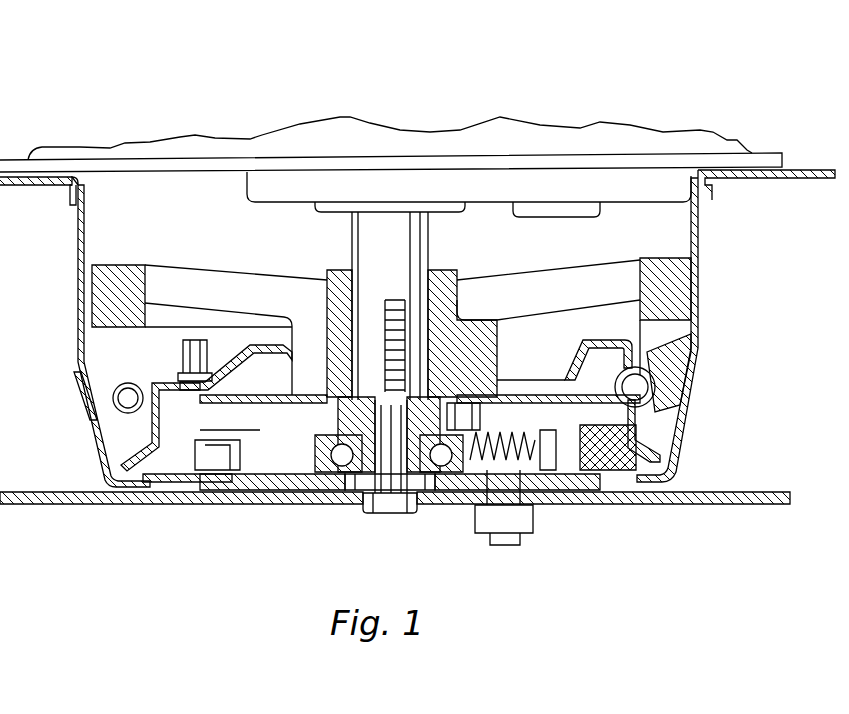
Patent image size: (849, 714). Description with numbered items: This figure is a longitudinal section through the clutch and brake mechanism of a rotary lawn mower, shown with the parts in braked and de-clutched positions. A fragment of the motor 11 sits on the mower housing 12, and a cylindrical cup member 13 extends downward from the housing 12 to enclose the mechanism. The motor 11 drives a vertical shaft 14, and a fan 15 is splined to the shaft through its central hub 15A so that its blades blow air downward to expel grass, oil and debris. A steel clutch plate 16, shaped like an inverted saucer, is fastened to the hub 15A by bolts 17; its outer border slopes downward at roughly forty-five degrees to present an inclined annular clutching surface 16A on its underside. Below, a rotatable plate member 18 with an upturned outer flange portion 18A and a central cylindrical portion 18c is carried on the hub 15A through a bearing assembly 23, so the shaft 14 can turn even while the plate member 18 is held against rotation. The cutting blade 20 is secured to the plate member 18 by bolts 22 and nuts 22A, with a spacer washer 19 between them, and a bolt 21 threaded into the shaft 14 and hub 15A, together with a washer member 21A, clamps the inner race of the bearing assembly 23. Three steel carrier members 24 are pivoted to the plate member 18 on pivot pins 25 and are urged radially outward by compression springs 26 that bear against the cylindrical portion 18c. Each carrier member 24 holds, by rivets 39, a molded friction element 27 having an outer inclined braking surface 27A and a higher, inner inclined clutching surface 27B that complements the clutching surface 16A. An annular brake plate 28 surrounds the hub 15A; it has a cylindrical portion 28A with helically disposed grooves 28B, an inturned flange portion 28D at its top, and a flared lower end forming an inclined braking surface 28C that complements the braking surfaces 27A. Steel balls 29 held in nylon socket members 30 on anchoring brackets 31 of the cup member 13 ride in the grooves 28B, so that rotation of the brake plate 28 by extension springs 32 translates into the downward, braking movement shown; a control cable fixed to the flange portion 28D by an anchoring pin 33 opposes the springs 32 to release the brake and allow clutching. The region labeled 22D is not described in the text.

The motor 11 is at (606, 133).
The mower housing 12 is at (795, 181).
The cup member 13 is at (760, 165).
The shaft 14 is at (412, 222).
The fan 15 is at (530, 285).
The hub 15A is at (488, 340).
The clutch plate 16 is at (302, 393).
The inclined annular clutching surface 16A is at (198, 416).
The bolts 17 is at (483, 411).
The rotatable plate member 18 is at (185, 490).
The outer flange portion 18A is at (700, 462).
The central cylindrical portion 18c is at (316, 448).
The spacer washer 19 is at (262, 492).
The cutting blade 20 is at (56, 506).
The bolt 21 is at (390, 515).
The washer member 21A is at (366, 498).
The bolts 22 is at (506, 546).
The nuts 22A is at (650, 338).
The plate recess 22D is at (598, 338).
The bearing assembly 23 is at (320, 492).
The carrier members 24 is at (210, 490).
The pivot pins 25 is at (232, 492).
The compression springs 26 is at (546, 470).
The friction elements 27 is at (625, 466).
The inclined braking surface 27A is at (640, 472).
The inclined clutching surface 27B is at (605, 470).
The brake plate 28 is at (640, 432).
The cylindrical portion 28A is at (150, 425).
The helically disposed grooves 28B is at (652, 411).
The inclined braking surface 28C is at (652, 437).
The inturned flange portion 28D is at (165, 383).
The steel balls 29 is at (660, 374).
The nylon socket members 30 is at (660, 366).
The anchoring brackets 31 is at (660, 397).
The extension springs 32 is at (115, 399).
The anchoring pin 33 is at (196, 340).
The rivets 39 is at (540, 472).